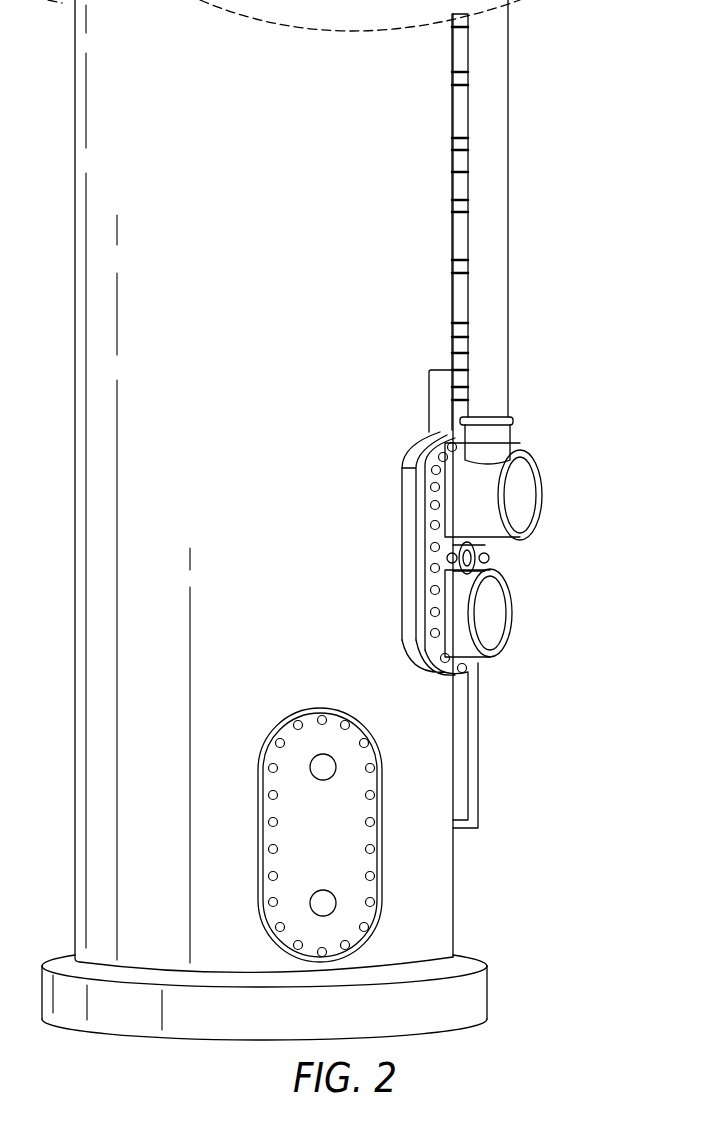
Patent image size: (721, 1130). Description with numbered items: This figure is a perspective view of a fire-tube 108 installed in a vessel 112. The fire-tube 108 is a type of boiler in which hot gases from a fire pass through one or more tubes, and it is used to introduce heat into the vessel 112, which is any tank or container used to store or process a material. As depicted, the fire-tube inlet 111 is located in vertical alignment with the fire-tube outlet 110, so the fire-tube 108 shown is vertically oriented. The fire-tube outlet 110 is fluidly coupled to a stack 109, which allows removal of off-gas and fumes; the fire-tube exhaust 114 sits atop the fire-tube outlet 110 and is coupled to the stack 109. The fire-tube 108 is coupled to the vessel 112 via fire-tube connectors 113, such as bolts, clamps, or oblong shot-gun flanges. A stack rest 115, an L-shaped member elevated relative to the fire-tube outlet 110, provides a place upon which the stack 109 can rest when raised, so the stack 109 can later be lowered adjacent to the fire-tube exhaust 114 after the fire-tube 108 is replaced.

The fire-tube 108 is at (483, 543).
The stack 109 is at (509, 228).
The fire-tube outlet 110 is at (543, 483).
The fire-tube inlet 111 is at (513, 621).
The vessel 112 is at (270, 482).
The fire-tube connectors 113 is at (420, 613).
The fire-tube exhaust 114 is at (513, 437).
The stack rest 115 is at (428, 416).